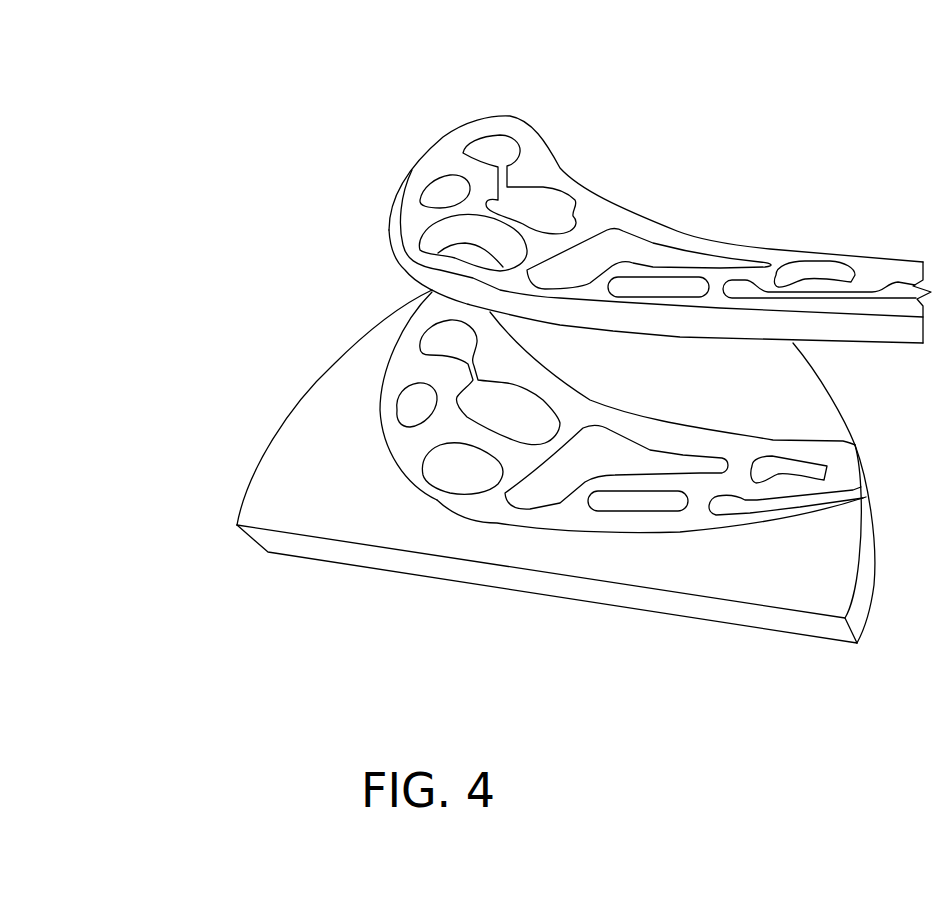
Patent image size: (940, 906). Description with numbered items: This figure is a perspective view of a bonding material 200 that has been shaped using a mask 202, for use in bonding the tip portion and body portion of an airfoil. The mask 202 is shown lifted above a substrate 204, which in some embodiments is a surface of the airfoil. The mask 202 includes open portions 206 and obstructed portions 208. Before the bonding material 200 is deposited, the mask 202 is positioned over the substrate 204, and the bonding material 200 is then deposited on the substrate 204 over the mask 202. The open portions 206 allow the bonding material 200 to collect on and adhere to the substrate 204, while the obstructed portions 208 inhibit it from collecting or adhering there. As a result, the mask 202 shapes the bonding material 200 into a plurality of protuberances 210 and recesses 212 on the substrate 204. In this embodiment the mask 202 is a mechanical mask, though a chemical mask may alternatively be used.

The bonding material 200 is at (226, 451).
The mask 202 is at (517, 100).
The substrate 204 is at (550, 432).
The open portions 206 is at (616, 227).
The obstructed portions 208 is at (718, 278).
The protuberances 210 is at (527, 417).
The recesses 212 is at (513, 475).